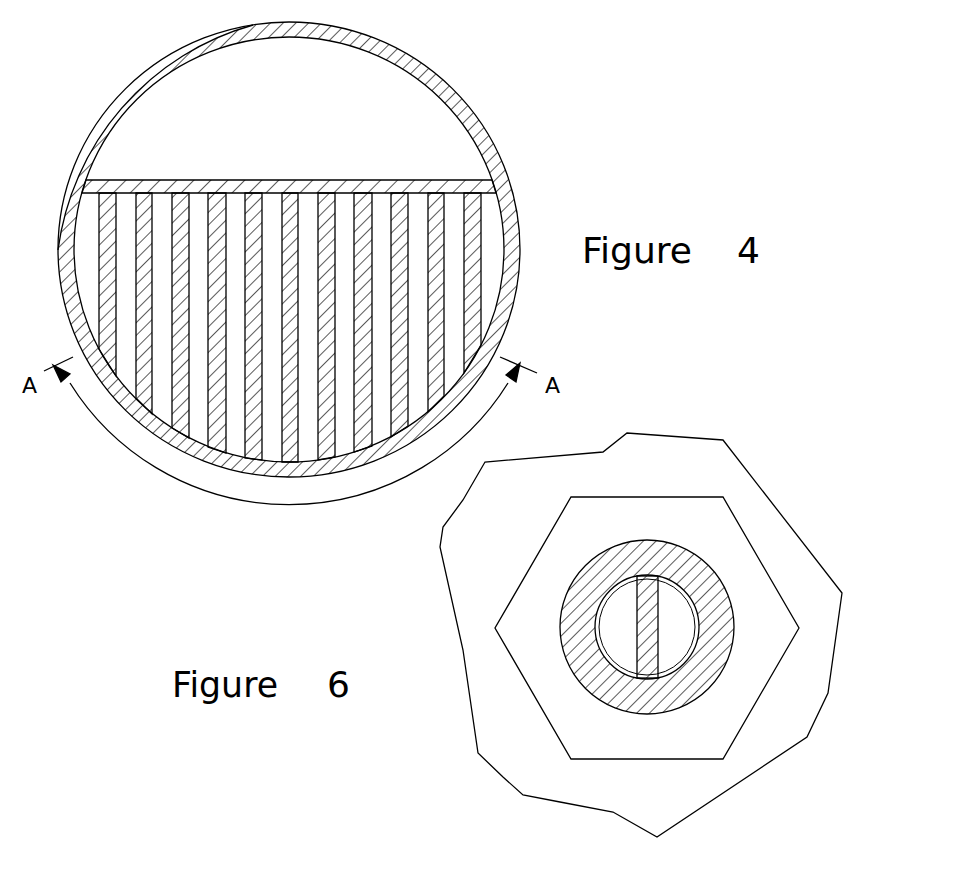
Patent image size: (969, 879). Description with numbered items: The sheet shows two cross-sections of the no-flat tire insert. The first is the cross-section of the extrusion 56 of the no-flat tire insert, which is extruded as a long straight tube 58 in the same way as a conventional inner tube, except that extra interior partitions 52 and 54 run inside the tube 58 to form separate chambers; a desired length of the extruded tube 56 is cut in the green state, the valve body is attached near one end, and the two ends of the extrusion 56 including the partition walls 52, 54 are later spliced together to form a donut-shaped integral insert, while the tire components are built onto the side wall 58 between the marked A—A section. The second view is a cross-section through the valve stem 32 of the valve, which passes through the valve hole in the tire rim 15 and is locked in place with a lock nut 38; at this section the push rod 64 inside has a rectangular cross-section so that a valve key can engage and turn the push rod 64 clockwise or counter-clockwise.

In FIG. 4, the extrusion of the no-flat tire insert 56 is at (337, 247).
In FIG. 4, the straight tube 58 is at (440, 78).
In FIG. 4, the interior partition 52 is at (193, 178).
In FIG. 4, the interior partition 54 is at (333, 223).
In FIG. 6, the tire rim 15 is at (505, 780).
In FIG. 6, the lock nut 38 is at (730, 747).
In FIG. 6, the valve stem 32 is at (730, 593).
In FIG. 6, the push rod 64 is at (660, 602).